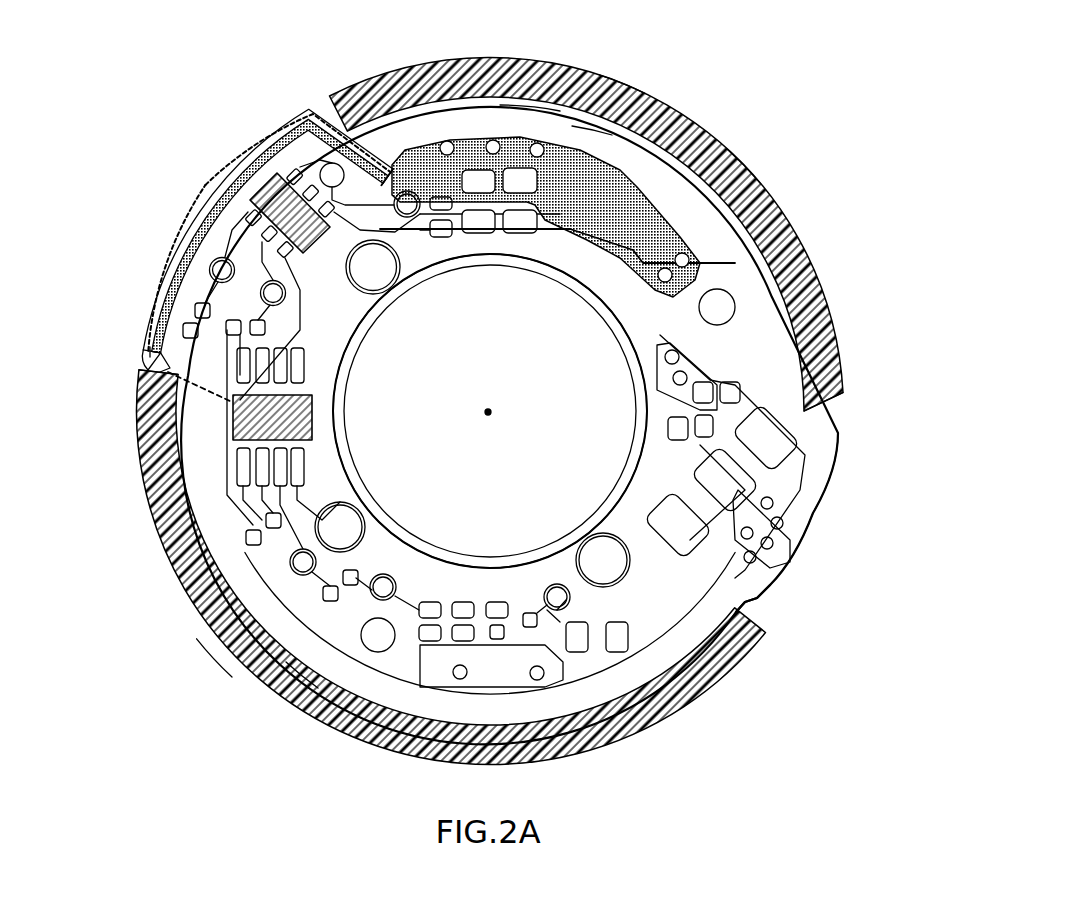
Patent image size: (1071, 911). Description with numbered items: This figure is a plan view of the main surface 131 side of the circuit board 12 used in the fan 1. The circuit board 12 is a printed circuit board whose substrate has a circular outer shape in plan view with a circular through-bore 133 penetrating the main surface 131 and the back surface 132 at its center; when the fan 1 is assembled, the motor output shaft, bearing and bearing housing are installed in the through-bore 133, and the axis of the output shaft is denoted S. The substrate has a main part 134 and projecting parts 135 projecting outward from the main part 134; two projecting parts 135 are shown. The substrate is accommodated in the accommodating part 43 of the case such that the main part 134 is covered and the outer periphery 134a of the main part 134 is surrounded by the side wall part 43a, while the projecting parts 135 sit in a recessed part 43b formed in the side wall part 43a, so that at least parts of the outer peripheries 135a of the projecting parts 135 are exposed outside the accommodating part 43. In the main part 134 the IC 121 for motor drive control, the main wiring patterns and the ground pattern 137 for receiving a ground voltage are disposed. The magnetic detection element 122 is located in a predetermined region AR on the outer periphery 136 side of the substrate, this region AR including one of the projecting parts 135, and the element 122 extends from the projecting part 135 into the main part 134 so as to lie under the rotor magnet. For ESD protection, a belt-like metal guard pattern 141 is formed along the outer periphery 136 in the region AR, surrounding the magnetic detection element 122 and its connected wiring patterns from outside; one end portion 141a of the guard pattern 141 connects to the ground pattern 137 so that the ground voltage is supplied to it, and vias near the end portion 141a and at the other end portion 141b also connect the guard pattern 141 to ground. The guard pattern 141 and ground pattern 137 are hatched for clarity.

The fan 1 is at (815, 112).
The circuit board 12 is at (772, 215).
The accommodating part 43 is at (660, 94).
The side wall part 43a is at (610, 92).
The recessed part 43b is at (846, 417).
The IC for motor drive control 121 is at (237, 433).
The magnetic detection element 122 is at (222, 142).
The main surface 131 is at (797, 349).
The back surface 132 is at (757, 583).
The through-bore 133 is at (560, 507).
The main part 134 is at (530, 117).
The outer periphery of the main part 134a is at (593, 103).
The projecting part 135 is at (278, 130).
The outer periphery of the projecting part 135a is at (170, 338).
The outer periphery of the substrate 136 is at (97, 330).
The ground pattern 137 is at (600, 193).
The guard pattern 141 is at (181, 274).
The one end portion of the guard pattern 141a is at (387, 164).
The other end portion of the guard pattern 141b is at (165, 392).
The predetermined region AR is at (148, 347).
The axis S is at (489, 412).